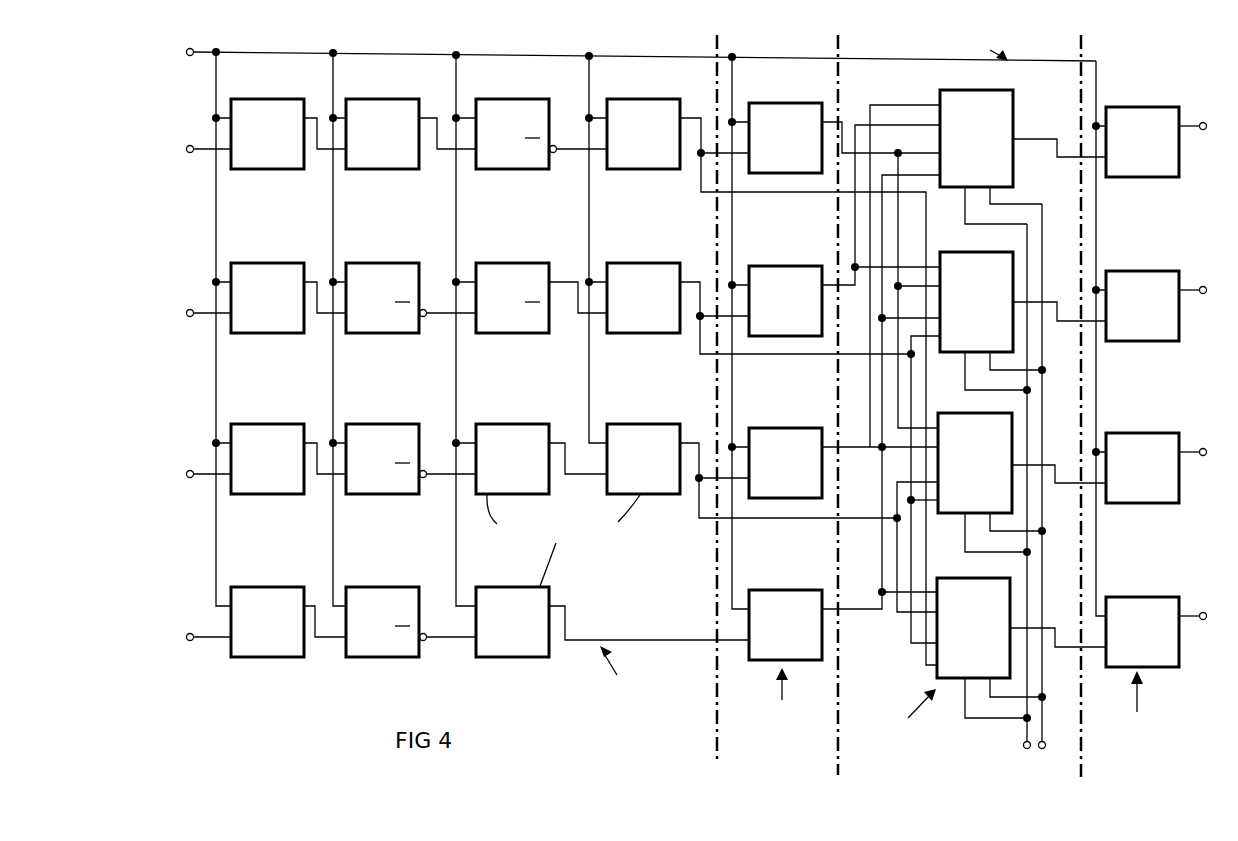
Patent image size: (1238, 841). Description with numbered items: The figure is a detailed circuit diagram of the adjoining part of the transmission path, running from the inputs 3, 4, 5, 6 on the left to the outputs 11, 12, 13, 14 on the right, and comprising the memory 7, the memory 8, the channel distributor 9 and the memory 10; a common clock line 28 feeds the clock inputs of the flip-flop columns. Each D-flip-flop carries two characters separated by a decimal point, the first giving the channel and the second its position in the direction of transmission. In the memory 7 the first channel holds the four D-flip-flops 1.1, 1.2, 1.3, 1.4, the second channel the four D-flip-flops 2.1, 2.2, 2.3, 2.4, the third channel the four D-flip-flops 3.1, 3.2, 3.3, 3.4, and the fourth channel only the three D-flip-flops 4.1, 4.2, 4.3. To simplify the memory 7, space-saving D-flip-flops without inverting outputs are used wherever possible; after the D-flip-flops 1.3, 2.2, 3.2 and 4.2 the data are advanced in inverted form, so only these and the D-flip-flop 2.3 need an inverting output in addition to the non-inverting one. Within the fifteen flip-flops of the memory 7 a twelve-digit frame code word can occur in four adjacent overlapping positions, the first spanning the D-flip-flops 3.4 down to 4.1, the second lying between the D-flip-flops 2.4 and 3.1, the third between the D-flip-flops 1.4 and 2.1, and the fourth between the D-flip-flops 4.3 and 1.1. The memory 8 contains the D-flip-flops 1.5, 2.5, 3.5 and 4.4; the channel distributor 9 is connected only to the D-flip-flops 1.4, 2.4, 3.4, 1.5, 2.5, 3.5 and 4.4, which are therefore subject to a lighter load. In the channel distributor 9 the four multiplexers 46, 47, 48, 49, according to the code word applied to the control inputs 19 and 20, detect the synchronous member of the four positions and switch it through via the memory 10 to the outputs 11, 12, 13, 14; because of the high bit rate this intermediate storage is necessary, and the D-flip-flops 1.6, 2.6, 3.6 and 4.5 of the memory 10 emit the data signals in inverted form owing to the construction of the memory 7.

The clock input T/4 28 is at (633, 328).
The input 3 is at (201, 149).
The input 4 is at (201, 313).
The input 5 is at (201, 474).
The input 6 is at (201, 637).
The memory 7 is at (431, 383).
The memory 8 is at (758, 393).
The channel distributor 9 is at (1067, 397).
The memory 10 is at (1228, 397).
The output 11 is at (1208, 126).
The output 12 is at (1208, 290).
The output 13 is at (1208, 452).
The output 14 is at (1208, 616).
The control input 19 is at (1012, 505).
The control input 20 is at (1057, 495).
The multiplexer 46 is at (1023, 157).
The multiplexer 47 is at (1023, 323).
The multiplexer 48 is at (1022, 484).
The multiplexer 49 is at (1021, 650).
The D-flip-flop 1.1 is at (288, 119).
The D-flip-flop 1.2 is at (411, 119).
The D-flip-flop 1.3 is at (541, 119).
The D-flip-flop 1.4 is at (772, 367).
The D-flip-flop 1.5 is at (844, 250).
The D-flip-flop 1.6 is at (1142, 127).
The D-flip-flop 2.1 is at (288, 283).
The D-flip-flop 2.2 is at (411, 283).
The D-flip-flop 2.3 is at (541, 283).
The D-flip-flop 2.4 is at (773, 438).
The D-flip-flop 2.5 is at (844, 230).
The D-flip-flop 2.6 is at (1142, 291).
The D-flip-flop 3.1 is at (288, 444).
The D-flip-flop 3.2 is at (411, 444).
The D-flip-flop 3.3 is at (541, 444).
The D-flip-flop 3.4 is at (772, 503).
The D-flip-flop 3.5 is at (844, 301).
The D-flip-flop 3.6 is at (1142, 453).
The D-flip-flop 4.1 is at (288, 607).
The D-flip-flop 4.2 is at (411, 607).
The D-flip-flop 4.3 is at (612, 607).
The D-flip-flop 4.4 is at (844, 417).
The D-flip-flop 4.5 is at (1142, 617).